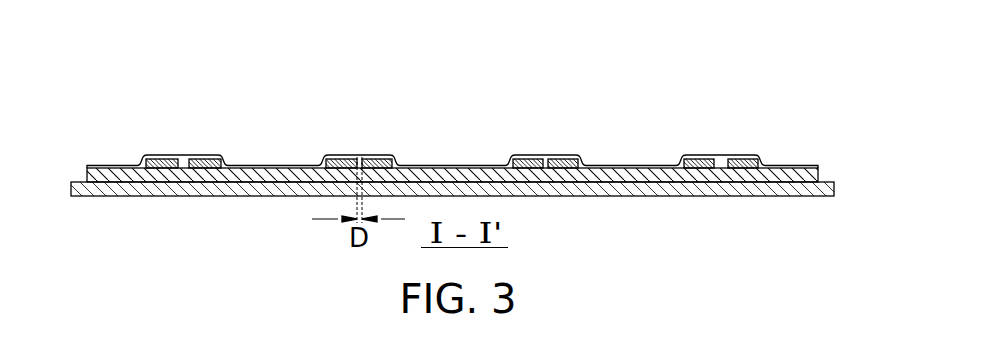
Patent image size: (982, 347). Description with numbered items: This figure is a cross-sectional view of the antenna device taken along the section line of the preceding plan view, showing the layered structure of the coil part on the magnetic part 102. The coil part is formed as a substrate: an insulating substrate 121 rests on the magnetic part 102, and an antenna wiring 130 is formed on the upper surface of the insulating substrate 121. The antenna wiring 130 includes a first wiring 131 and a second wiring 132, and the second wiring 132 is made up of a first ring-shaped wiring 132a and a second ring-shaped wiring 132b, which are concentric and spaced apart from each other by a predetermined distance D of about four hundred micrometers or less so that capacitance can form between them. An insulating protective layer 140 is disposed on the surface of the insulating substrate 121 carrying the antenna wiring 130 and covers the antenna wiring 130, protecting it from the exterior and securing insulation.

The magnetic part 102 is at (716, 186).
The insulating substrate 121 is at (606, 172).
The antenna wiring 130 is at (452, 85).
The first wiring 131 is at (196, 158).
The second wiring 132 is at (364, 108).
The first ring-shaped wiring 132a is at (393, 128).
The second ring-shaped wiring 132b is at (327, 158).
The insulating protective layer 140 is at (505, 155).